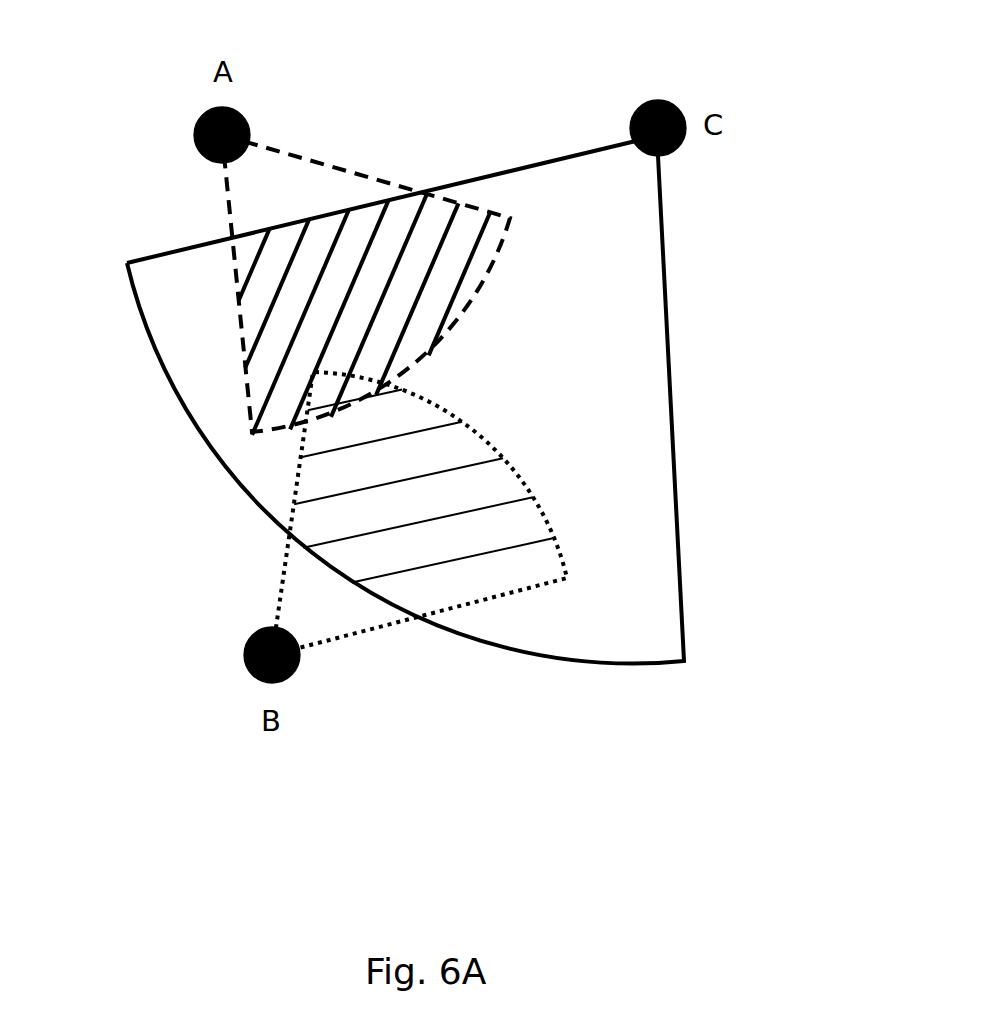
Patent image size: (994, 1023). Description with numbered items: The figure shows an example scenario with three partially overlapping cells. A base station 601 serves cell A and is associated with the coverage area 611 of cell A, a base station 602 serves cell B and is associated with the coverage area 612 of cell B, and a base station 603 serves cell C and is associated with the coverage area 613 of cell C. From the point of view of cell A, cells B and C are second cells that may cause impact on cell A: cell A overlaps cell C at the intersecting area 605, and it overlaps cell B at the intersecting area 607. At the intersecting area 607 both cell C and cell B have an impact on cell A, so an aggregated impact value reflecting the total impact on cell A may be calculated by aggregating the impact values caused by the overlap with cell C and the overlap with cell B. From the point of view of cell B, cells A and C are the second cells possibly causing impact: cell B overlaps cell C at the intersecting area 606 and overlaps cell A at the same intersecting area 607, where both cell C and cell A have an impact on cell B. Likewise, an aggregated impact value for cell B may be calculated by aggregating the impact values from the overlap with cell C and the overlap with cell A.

The base station of cell A 601 is at (181, 103).
The base station of cell B 602 is at (217, 679).
The base station of cell C 603 is at (671, 81).
The intersecting area 605 is at (251, 270).
The intersecting area 606 is at (426, 610).
The intersecting area 607 is at (312, 402).
The coverage area of cell A 611 is at (366, 245).
The coverage area of cell B 612 is at (368, 513).
The coverage area of cell C 613 is at (455, 401).